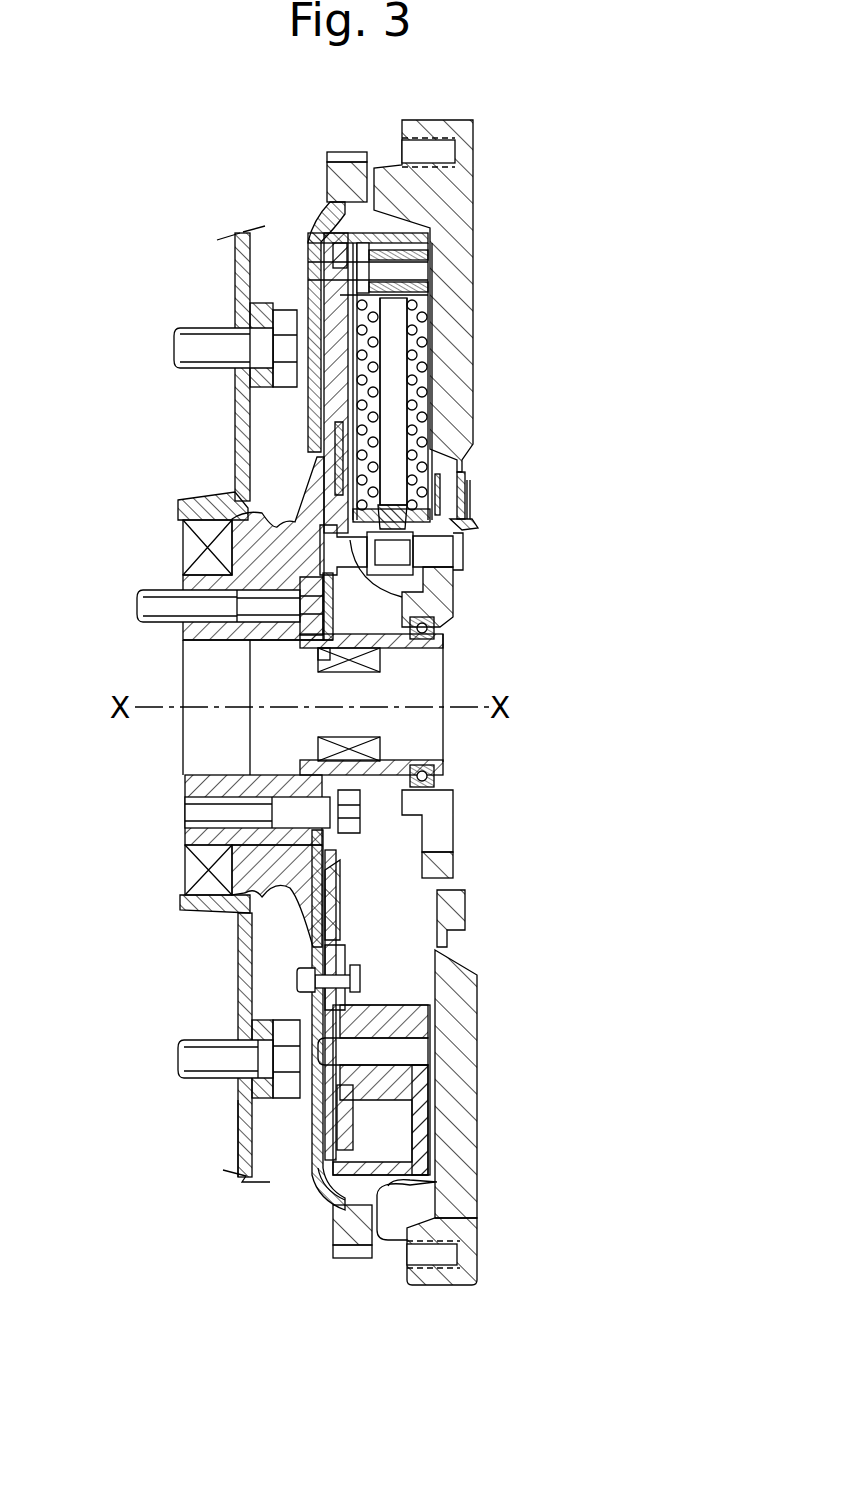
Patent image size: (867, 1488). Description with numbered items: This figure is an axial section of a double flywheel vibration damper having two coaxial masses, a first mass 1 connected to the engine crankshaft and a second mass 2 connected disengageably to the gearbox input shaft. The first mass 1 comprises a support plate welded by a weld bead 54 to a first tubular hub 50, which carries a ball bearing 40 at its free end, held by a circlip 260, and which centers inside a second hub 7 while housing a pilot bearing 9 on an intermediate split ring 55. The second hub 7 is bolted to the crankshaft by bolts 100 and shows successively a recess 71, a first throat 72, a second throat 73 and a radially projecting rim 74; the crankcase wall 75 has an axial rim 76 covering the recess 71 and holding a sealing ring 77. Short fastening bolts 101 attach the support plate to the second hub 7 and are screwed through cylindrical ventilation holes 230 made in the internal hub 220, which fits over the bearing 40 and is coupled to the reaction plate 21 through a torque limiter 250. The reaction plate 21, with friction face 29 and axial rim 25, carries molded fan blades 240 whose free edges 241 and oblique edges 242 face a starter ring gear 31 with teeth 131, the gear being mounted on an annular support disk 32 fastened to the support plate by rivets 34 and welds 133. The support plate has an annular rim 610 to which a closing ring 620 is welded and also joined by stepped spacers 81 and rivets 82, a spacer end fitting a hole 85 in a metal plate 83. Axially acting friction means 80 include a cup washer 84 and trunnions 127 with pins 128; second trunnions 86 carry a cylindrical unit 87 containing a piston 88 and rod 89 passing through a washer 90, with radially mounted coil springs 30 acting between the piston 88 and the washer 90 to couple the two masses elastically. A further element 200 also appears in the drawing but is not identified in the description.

The first mass 1 is at (283, 1133).
The second mass 2 is at (492, 195).
The second hub 7 is at (178, 578).
The pilot bearing 9 is at (370, 675).
The reaction plate 21 is at (465, 1153).
The annular rim 25 is at (440, 1288).
The friction face 29 is at (480, 1095).
The elastic parts 30 is at (420, 355).
The starter ring gear 31 is at (330, 178).
The annular support disk 32 is at (318, 222).
The rivets 34 is at (300, 978).
The ball bearing 40 is at (435, 783).
The first hub 50 is at (440, 642).
The weld bead 54 is at (300, 682).
The intermediate split ring 55 is at (300, 652).
The recess 71 is at (185, 533).
The first throat 72 is at (215, 492).
The second throat 73 is at (300, 460).
The rim 74 is at (245, 415).
The crankcase wall 75 is at (235, 278).
The rim 76 is at (210, 912).
The sealing ring 77 is at (185, 873).
The friction means 80 is at (362, 941).
The spacers 81 is at (405, 1083).
The rivets 82 is at (425, 1052).
The metal plate 83 is at (350, 1010).
The cup washer 84 is at (350, 905).
The hole 85 is at (315, 1100).
The second trunnions 86 is at (420, 268).
The unit 87 is at (420, 322).
The piston 88 is at (420, 294).
The rod 89 is at (395, 398).
The washer 90 is at (465, 523).
The bolts 100 is at (140, 607).
The fastening bolts 101 is at (285, 808).
The trunnions 127 is at (465, 558).
The pins 128 is at (455, 615).
The set of teeth 131 is at (340, 150).
The welds 133 is at (320, 1192).
The drive bolt 200 is at (192, 1060).
The internal hub 220 is at (452, 852).
The ventilation holes 230 is at (430, 793).
The fan blades 240 is at (415, 1212).
The axially free edges 241 is at (372, 1258).
The internal oblique edge 242 is at (385, 1185).
The torque limiter 250 is at (470, 482).
The circlip 260 is at (440, 755).
The annular rim 610 is at (333, 1242).
The closing ring 620 is at (430, 1005).